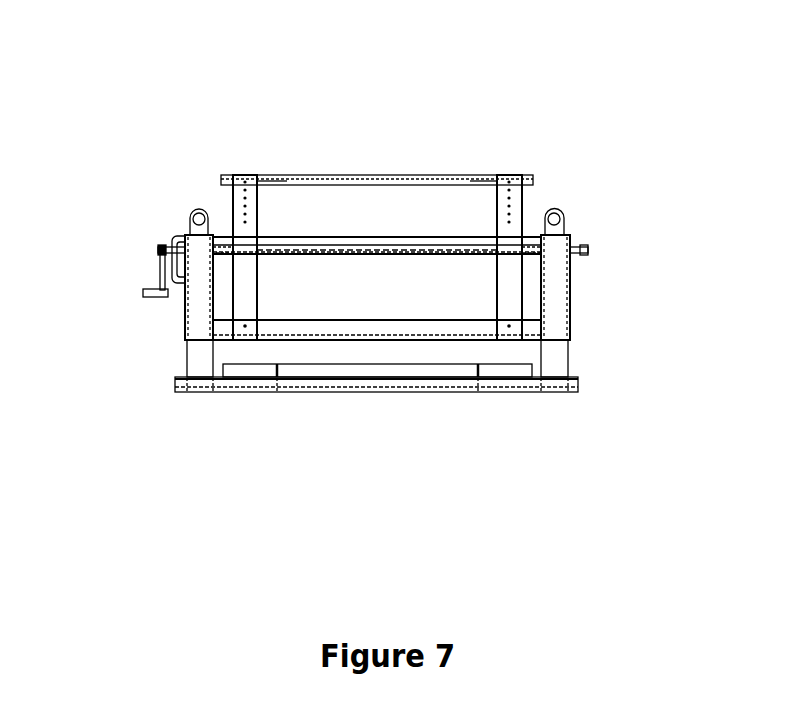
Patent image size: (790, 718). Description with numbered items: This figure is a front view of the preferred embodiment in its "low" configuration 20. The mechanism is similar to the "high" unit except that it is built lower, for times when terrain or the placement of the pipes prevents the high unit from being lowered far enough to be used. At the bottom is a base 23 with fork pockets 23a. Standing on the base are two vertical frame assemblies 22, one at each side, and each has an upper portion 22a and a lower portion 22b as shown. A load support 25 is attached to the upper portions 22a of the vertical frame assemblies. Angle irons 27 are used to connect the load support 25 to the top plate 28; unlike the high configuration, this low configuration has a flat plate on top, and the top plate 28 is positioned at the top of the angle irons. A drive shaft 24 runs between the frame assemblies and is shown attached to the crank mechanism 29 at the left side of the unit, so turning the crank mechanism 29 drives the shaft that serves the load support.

The low configuration 20 is at (243, 100).
The vertical frame assembly 22 is at (132, 347).
The upper portion 22a is at (183, 308).
The lower portion 22b is at (192, 357).
The base 23 is at (333, 407).
The fork pocket 23a is at (253, 369).
The drive shaft 24 is at (405, 256).
The load support 25 is at (388, 320).
The angle iron 27 is at (232, 210).
The top plate 28 is at (402, 170).
The crank mechanism 29 is at (168, 243).